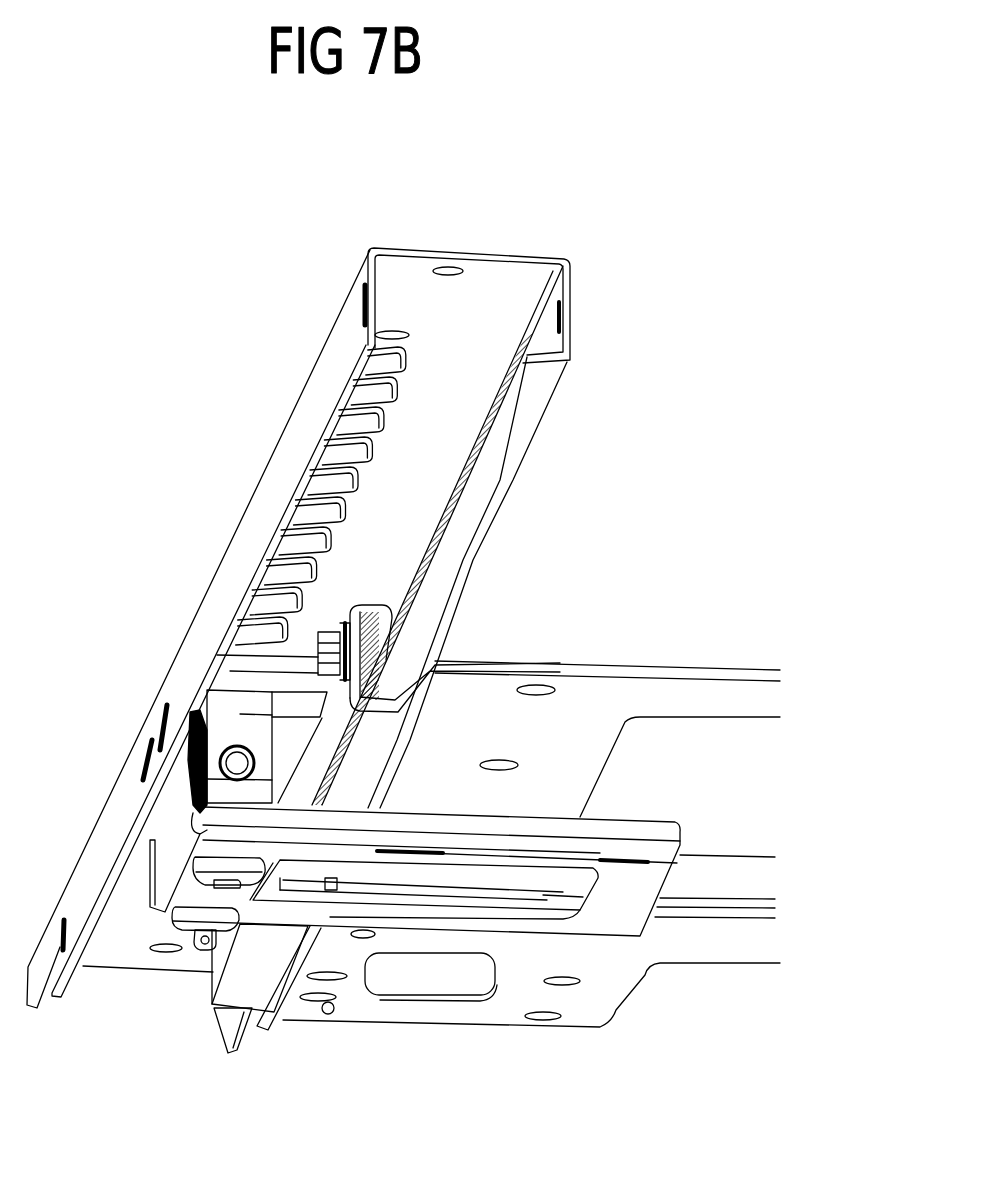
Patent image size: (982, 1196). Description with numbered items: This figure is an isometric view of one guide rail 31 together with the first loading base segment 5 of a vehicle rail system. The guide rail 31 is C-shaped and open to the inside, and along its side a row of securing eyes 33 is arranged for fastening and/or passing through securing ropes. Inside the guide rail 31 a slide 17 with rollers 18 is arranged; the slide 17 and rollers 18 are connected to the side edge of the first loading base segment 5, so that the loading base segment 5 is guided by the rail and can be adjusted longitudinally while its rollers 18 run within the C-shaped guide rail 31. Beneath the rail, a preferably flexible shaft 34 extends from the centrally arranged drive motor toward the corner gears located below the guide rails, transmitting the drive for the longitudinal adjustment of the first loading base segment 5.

The first loading base segment 5 is at (612, 693).
The slide 17 is at (225, 727).
The roller 18 is at (385, 622).
The guide rail 31 is at (250, 540).
The securing eye 33 is at (327, 476).
The flexible shaft 34 is at (727, 868).